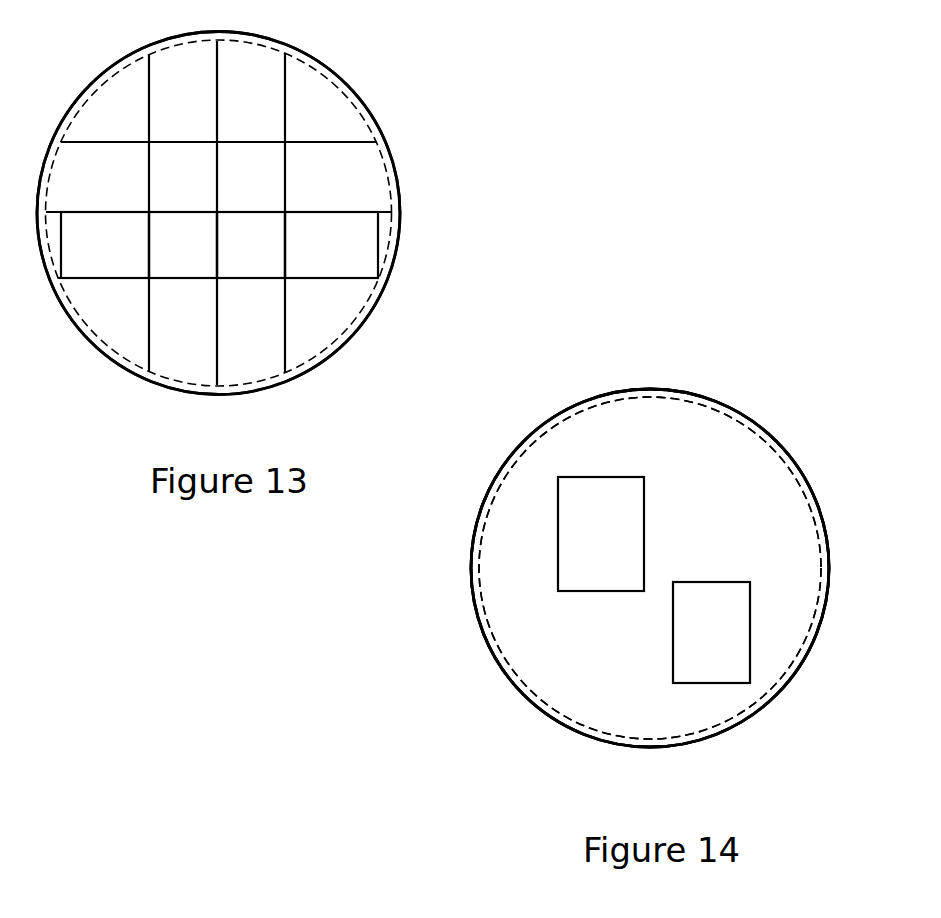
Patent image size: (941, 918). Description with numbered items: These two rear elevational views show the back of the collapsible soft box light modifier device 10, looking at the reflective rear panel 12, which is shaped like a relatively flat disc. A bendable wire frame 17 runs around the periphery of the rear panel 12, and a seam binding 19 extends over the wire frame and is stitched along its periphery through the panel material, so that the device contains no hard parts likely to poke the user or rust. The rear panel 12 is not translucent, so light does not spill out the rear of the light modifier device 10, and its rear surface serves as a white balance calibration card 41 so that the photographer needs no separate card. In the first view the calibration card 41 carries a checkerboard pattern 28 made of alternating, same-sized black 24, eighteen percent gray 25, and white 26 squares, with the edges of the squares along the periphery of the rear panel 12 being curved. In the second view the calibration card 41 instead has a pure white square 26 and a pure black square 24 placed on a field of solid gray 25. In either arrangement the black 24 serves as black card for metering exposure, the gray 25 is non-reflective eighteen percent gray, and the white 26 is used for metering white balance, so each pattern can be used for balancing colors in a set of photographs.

In FIG. 13, the light modifier device 10 is at (366, 83).
In FIG. 14, the light modifier device 10 is at (780, 418).
In FIG. 13, the reflective rear panel 12 is at (253, 79).
In FIG. 14, the reflective rear panel 12 is at (673, 432).
In FIG. 13, the bendable wire frame 17 is at (400, 184).
In FIG. 14, the bendable wire frame 17 is at (815, 493).
In FIG. 14, the seam binding 19 is at (803, 655).
In FIG. 13, the black zone 24 is at (190, 258).
In FIG. 14, the black zone 24 is at (720, 650).
In FIG. 13, the gray zone 25 is at (260, 258).
In FIG. 14, the gray zone 25 is at (570, 455).
In FIG. 13, the white zone 26 is at (118, 258).
In FIG. 14, the white zone 26 is at (592, 532).
In FIG. 13, the checkerboard pattern 28 is at (310, 141).
In FIG. 13, the white balance calibration card 41 is at (408, 270).
In FIG. 14, the white balance calibration card 41 is at (858, 565).